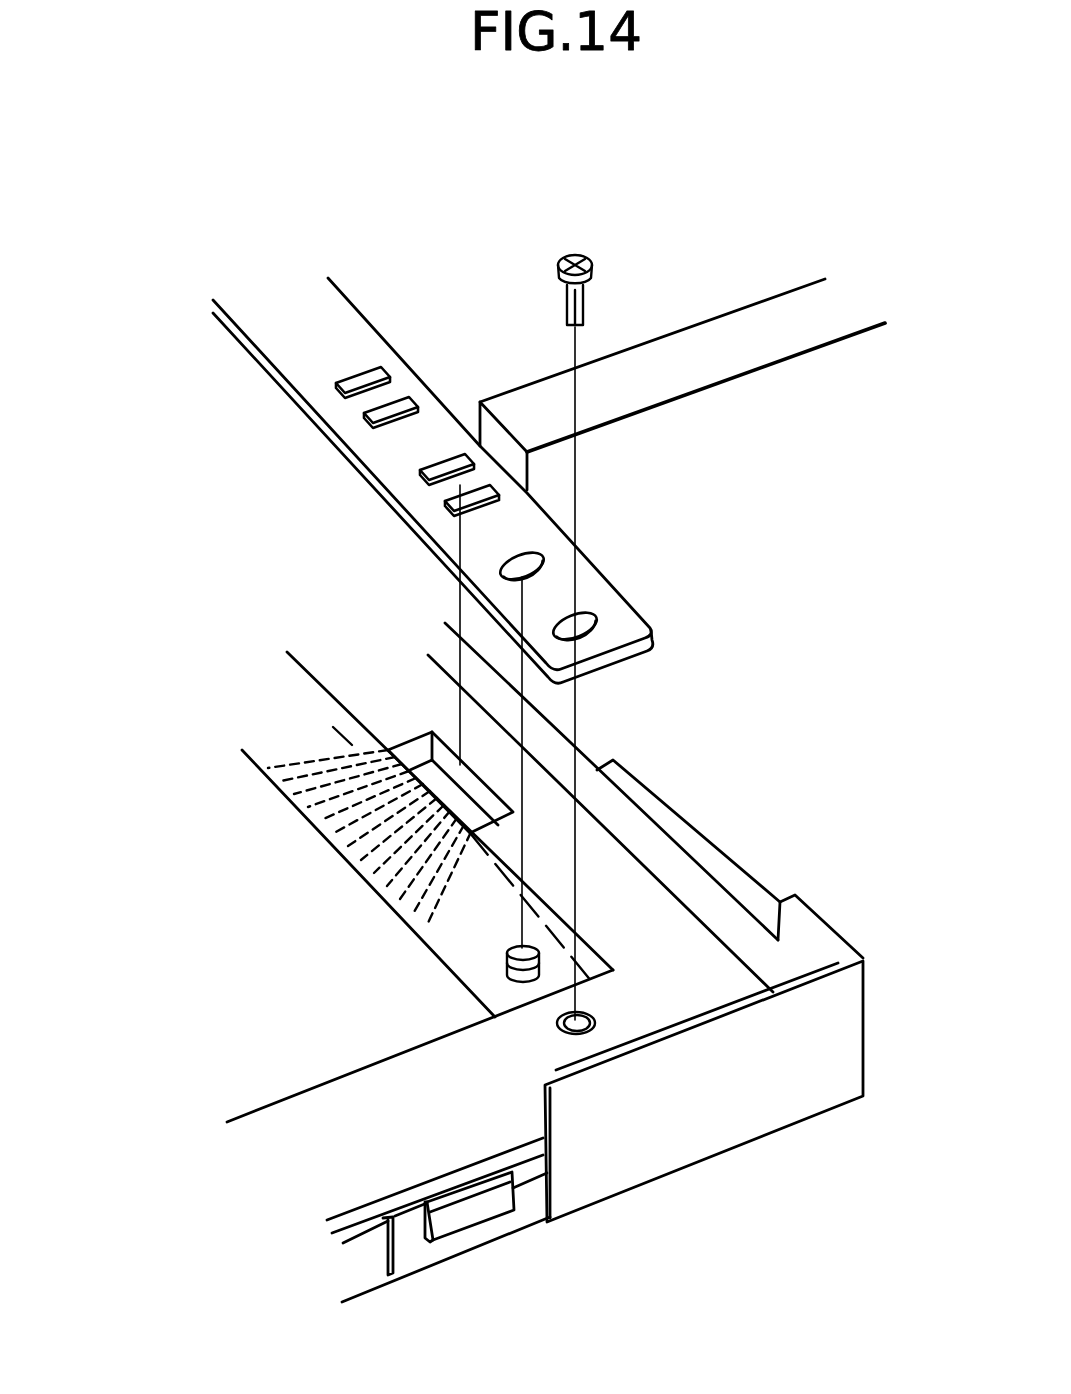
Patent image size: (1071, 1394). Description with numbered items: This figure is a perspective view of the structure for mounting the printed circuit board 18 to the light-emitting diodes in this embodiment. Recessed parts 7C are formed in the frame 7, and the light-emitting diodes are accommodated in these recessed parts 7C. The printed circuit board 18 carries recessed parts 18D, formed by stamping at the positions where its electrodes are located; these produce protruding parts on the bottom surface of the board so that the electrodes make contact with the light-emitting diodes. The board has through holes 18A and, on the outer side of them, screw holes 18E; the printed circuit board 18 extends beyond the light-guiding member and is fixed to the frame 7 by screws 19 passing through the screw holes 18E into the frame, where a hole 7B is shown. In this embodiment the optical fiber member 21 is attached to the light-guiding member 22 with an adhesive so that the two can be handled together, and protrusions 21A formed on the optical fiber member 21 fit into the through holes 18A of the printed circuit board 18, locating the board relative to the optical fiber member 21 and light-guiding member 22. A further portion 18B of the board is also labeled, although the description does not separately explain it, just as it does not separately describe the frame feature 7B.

The frame 7 is at (708, 1140).
The screw hole of frame 7B is at (593, 1013).
The recessed parts 7C is at (400, 715).
The printed circuit board 18 is at (338, 310).
The through holes 18A is at (540, 570).
The wall portion of fixing plate 18B is at (678, 382).
The recessed parts 18D is at (453, 497).
The screw holes 18E is at (588, 617).
The screws 19 is at (578, 255).
The optical fiber member 21 is at (318, 807).
The protrusions 21A is at (507, 962).
The light-guiding member 22 is at (255, 885).